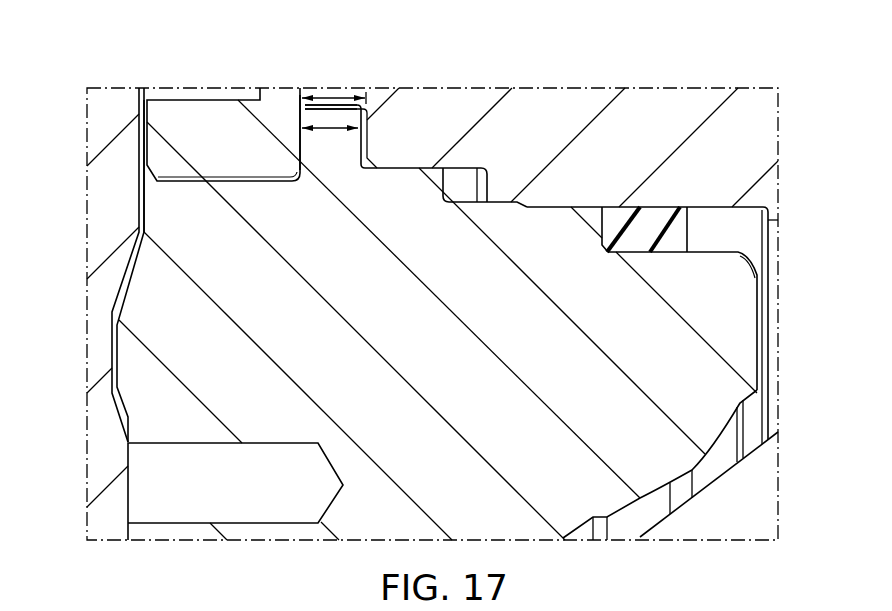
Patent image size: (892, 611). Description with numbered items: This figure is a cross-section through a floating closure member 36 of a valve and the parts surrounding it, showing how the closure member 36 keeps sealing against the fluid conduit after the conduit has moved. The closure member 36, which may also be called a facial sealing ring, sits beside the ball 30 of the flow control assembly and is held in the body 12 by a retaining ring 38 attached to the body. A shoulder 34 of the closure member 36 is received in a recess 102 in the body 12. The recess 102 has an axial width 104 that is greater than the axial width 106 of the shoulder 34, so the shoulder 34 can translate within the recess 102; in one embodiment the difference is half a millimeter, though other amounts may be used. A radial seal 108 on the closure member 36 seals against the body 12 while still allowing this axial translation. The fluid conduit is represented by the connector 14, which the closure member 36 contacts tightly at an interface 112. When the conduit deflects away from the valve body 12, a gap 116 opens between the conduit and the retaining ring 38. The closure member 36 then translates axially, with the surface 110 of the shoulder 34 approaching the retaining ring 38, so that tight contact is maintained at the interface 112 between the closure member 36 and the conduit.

The body 12 is at (660, 100).
The connector 14 is at (118, 106).
The ball 30 is at (752, 487).
The shoulder 34 is at (349, 149).
The closure member 36 is at (740, 307).
The retaining ring 38 is at (182, 115).
The recess 102 is at (325, 107).
The axial width 104 is at (337, 95).
The axial width 106 is at (333, 137).
The radial seal 108 is at (650, 215).
The surface 110 is at (303, 134).
The interface 112 is at (126, 462).
The gap 116 is at (140, 152).